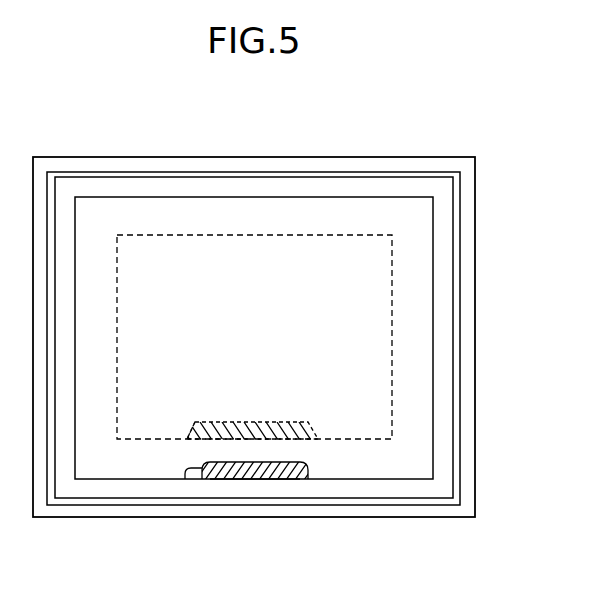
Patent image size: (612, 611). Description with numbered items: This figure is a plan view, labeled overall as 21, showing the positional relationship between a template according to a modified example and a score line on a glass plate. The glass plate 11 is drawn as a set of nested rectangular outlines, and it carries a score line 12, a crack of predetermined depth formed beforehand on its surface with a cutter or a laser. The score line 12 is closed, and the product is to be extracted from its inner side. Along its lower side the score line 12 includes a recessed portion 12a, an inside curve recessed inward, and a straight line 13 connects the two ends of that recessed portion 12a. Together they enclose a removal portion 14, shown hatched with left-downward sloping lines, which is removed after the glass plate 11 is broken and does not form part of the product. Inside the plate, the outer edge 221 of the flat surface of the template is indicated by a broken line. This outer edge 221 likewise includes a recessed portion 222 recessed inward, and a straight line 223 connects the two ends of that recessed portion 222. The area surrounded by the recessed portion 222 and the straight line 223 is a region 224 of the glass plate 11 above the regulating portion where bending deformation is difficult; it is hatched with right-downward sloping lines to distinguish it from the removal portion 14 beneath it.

The display device 21 is at (128, 152).
The glass plate 11 is at (448, 284).
The score line 12 is at (433, 320).
The recessed portion 12a is at (186, 479).
The straight line 13 is at (287, 479).
The removal portion 14 is at (243, 470).
The outer edge 221 is at (238, 235).
The recessed portion 222 is at (190, 433).
The straight line 223 is at (308, 422).
The region 224 is at (305, 432).